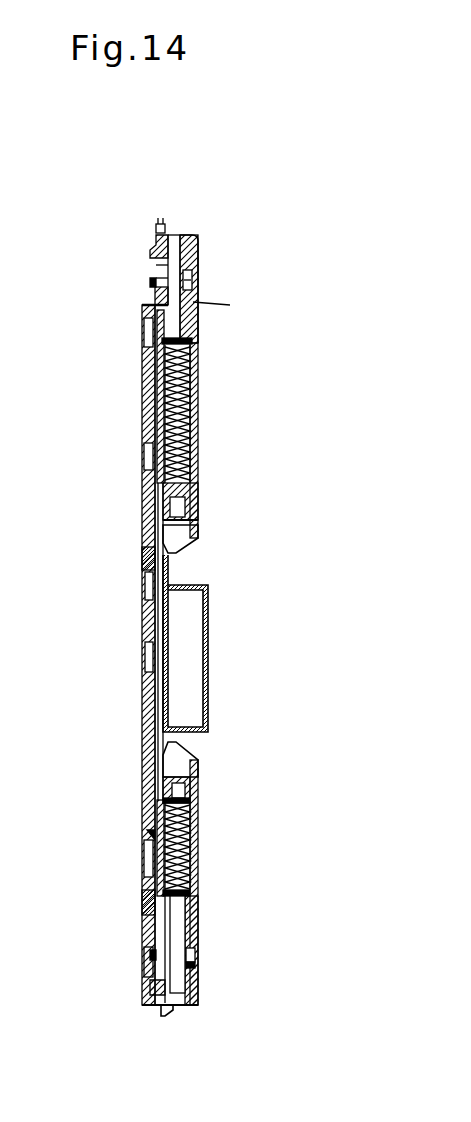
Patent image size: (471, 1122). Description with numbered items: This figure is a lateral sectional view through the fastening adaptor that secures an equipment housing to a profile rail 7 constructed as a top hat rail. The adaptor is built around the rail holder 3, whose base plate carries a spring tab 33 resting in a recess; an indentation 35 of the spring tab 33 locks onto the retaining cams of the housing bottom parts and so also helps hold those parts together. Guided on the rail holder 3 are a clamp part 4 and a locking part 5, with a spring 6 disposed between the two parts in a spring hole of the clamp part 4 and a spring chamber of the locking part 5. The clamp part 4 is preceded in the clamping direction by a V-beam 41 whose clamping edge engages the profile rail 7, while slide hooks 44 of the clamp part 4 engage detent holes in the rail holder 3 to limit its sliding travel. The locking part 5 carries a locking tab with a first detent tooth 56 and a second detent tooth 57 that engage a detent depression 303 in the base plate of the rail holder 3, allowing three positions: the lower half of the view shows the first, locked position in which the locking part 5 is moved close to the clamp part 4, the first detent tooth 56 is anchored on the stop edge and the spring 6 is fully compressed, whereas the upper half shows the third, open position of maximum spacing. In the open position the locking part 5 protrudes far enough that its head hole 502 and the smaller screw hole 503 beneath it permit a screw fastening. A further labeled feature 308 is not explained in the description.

The rail holder 3 is at (148, 498).
The clamp part 4 is at (192, 500).
The locking part 5 is at (188, 915).
The spring 6 is at (187, 397).
The profile rail 7 is at (240, 660).
The spring tab 33 is at (147, 558).
The indentation 35 is at (145, 598).
The V-beam 41 is at (180, 533).
The slide hooks 44 is at (150, 455).
The first detent tooth 56 is at (152, 250).
The second detent tooth 57 is at (150, 280).
The detent depression 303 is at (150, 340).
The pin 308 is at (161, 222).
The head hole 502 is at (157, 292).
The screw hole 503 is at (195, 278).